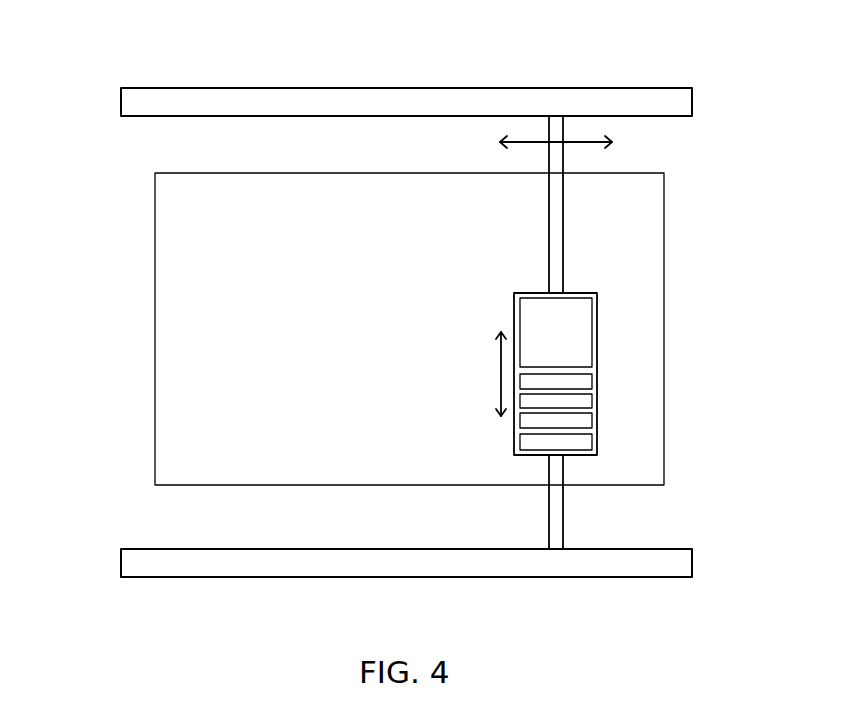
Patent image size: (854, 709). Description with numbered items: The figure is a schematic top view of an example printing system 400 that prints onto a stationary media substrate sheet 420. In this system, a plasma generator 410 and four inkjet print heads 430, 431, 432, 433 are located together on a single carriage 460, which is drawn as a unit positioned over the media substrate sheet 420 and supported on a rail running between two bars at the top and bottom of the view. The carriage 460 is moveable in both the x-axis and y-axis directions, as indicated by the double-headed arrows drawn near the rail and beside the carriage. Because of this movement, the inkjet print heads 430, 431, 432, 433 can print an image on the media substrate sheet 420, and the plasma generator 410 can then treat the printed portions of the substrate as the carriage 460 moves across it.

The printing system 400 is at (130, 72).
The plasma generator 410 is at (577, 316).
The stationary media substrate sheet 420 is at (187, 342).
The inkjet print head 430 is at (578, 382).
The inkjet print head 431 is at (578, 400).
The inkjet print head 432 is at (578, 418).
The inkjet print head 433 is at (578, 440).
The carriage 460 is at (580, 295).